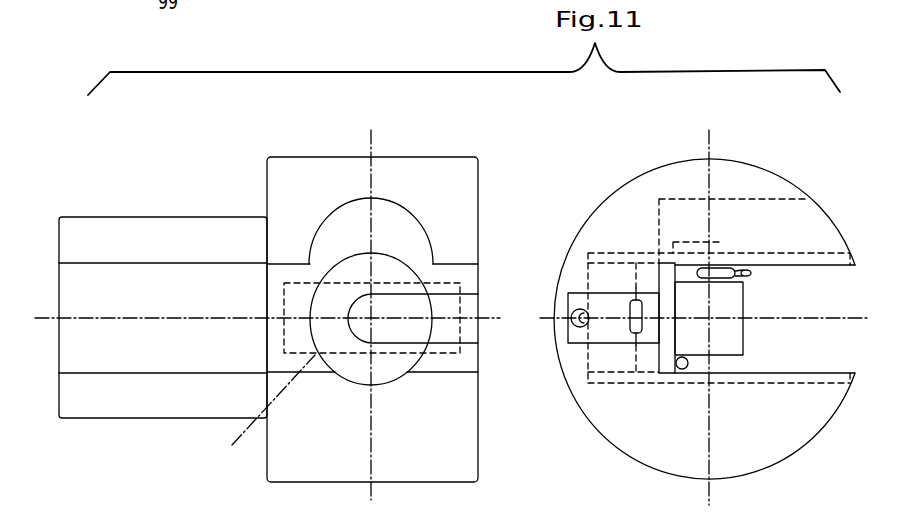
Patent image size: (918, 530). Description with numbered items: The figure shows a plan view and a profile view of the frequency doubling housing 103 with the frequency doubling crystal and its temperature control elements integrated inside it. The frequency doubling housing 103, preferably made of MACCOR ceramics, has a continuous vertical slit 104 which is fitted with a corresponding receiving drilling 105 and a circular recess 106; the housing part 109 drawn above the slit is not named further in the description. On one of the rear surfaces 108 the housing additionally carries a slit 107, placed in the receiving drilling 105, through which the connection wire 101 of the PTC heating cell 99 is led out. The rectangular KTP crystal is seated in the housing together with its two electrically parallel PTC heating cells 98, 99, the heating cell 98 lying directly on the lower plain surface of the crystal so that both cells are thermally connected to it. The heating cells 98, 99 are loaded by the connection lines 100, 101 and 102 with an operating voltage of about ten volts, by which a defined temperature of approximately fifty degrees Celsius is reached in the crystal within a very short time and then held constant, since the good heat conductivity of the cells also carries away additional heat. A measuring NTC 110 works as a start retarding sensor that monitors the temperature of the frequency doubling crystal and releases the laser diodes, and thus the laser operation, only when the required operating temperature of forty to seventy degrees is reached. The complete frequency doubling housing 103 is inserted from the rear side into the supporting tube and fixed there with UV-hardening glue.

The frequency doubling housing 103 is at (160, 418).
The continuous vertical slit 104 is at (147, 285).
The upper jaw part 109 is at (224, 232).
The rear surface 108 is at (480, 422).
The circular recess 106 is at (343, 213).
The receiving drilling 105 is at (358, 266).
The slit 107 is at (480, 330).
The PTC heating cell 99 is at (600, 283).
The PTC heating cell 98 is at (648, 365).
The connection line 102 is at (582, 328).
The connection wire 101 is at (637, 298).
The measuring NTC 110 is at (716, 243).
The connection line 100 is at (711, 397).